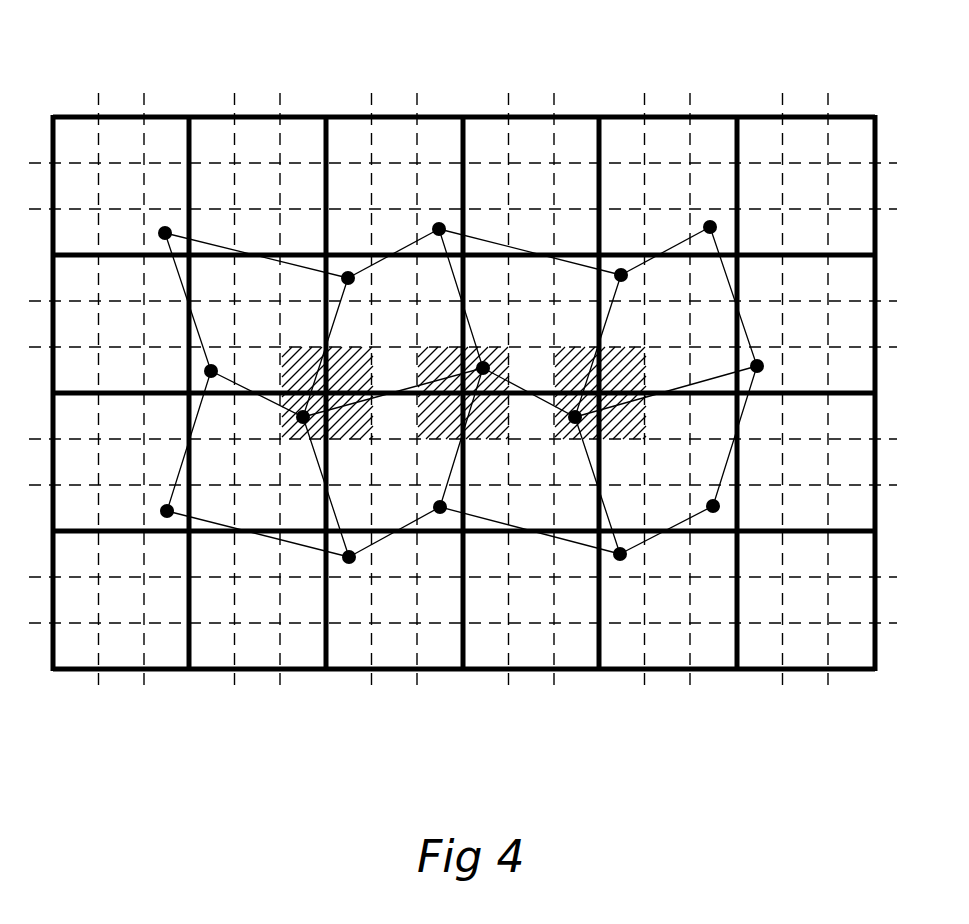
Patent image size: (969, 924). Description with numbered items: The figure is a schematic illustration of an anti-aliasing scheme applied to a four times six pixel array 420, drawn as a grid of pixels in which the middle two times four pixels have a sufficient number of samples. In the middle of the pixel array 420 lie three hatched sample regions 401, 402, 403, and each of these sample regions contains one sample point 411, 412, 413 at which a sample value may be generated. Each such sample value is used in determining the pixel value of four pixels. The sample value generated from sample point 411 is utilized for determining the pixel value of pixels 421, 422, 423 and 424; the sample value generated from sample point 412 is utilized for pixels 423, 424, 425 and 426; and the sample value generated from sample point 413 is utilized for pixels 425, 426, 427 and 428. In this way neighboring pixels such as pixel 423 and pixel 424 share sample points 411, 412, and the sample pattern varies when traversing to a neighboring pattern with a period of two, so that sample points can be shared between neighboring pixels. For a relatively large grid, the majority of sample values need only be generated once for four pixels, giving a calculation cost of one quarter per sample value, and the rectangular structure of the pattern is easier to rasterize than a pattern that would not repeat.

The pixel array 420 is at (130, 58).
The sample region 401 is at (297, 347).
The sample region 402 is at (428, 347).
The sample region 403 is at (633, 367).
The sample point 411 is at (303, 417).
The sample point 412 is at (483, 368).
The sample point 413 is at (575, 417).
The pixel 421 is at (209, 250).
The pixel 422 is at (215, 533).
The pixel 423 is at (357, 347).
The pixel 424 is at (362, 532).
The pixel 425 is at (490, 250).
The pixel 426 is at (485, 530).
The pixel 427 is at (622, 252).
The pixel 428 is at (643, 530).